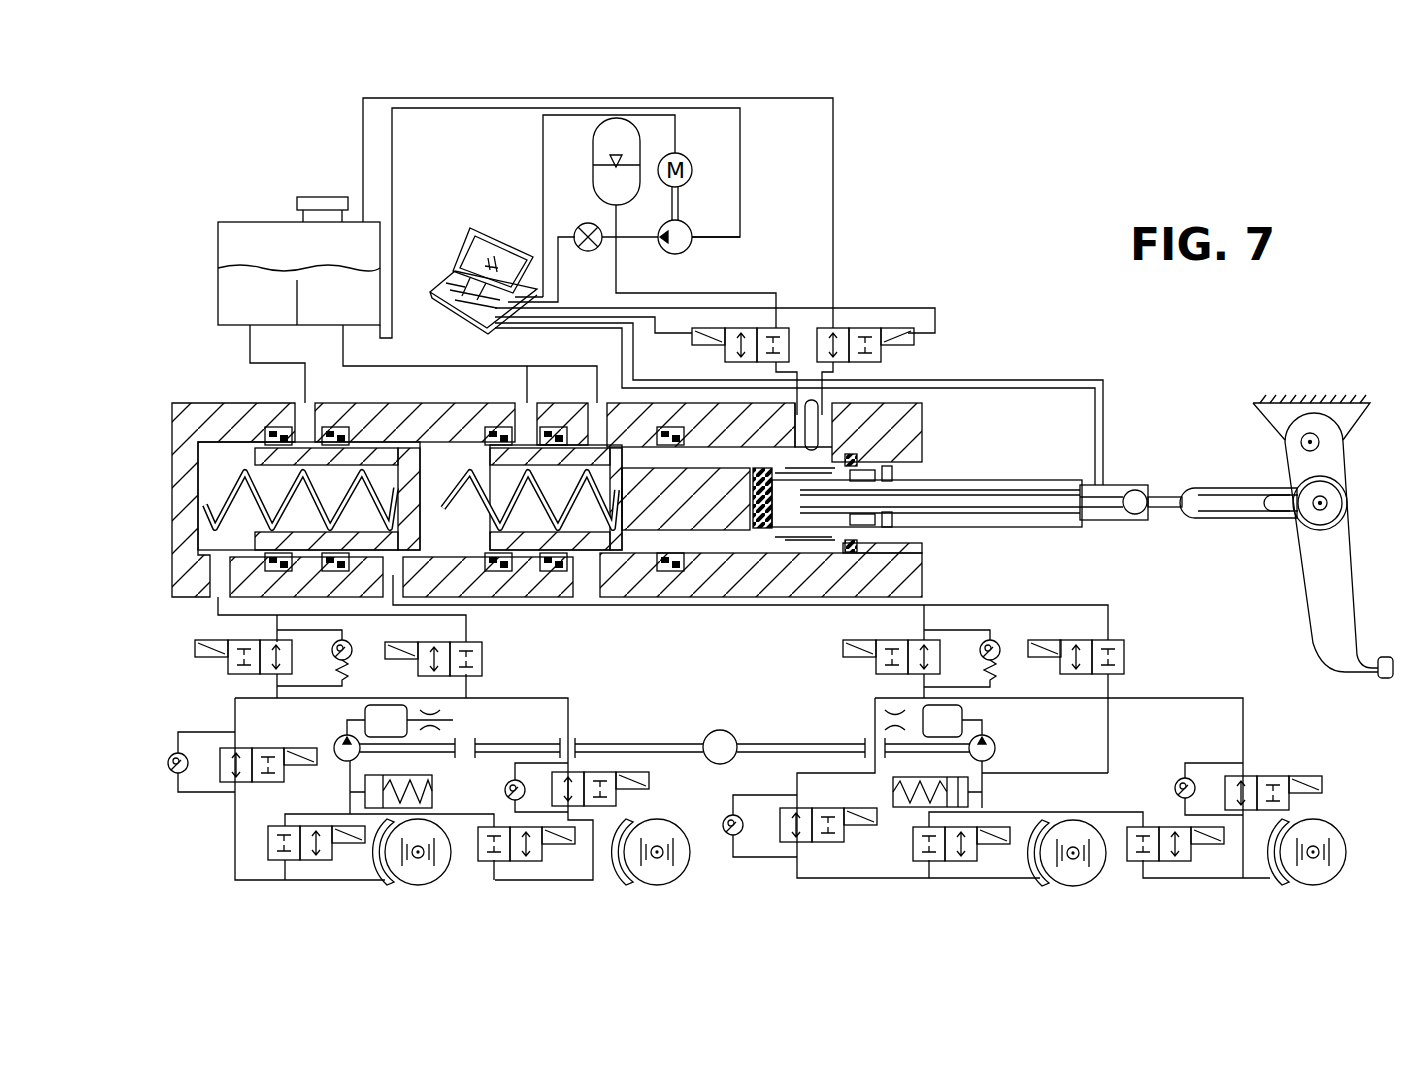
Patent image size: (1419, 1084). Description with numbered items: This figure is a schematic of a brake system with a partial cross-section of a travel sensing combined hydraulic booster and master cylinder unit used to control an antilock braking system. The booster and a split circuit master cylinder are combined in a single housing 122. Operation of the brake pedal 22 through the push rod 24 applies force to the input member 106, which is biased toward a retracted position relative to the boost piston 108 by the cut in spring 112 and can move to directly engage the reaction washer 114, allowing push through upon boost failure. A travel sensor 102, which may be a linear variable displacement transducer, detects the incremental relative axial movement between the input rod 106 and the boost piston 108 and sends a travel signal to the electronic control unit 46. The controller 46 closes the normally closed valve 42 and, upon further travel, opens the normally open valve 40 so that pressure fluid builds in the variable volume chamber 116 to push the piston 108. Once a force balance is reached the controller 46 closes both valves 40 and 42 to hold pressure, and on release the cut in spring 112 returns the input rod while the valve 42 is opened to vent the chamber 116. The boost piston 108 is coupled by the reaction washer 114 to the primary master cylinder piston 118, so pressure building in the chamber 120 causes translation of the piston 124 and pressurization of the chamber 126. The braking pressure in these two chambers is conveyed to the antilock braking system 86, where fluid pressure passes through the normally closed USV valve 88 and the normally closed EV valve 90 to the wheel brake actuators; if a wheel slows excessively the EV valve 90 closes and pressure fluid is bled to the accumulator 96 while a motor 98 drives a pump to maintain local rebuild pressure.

The brake pedal 22 is at (1390, 655).
The pedal push rod 24 is at (1225, 498).
The normally open valve 40 is at (722, 350).
The normally closed valve 42 is at (880, 350).
The electronic control unit 46 is at (440, 283).
The antilock braking system 86 is at (1293, 749).
The USV valve 88 is at (228, 660).
The EV valve 90 is at (260, 748).
The accumulator 96 is at (432, 790).
The motor 98 is at (735, 735).
The travel sensor 102 is at (830, 477).
The input member 106 is at (1100, 520).
The boost piston 108 is at (703, 540).
The cut in spring 112 is at (880, 523).
The reaction washer 114 is at (765, 598).
The variable volume chamber 116 is at (822, 598).
The primary master cylinder piston 118 is at (587, 542).
The chamber 120 is at (457, 535).
The housing 122 is at (200, 410).
The piston 124 is at (363, 445).
The chamber 126 is at (222, 462).